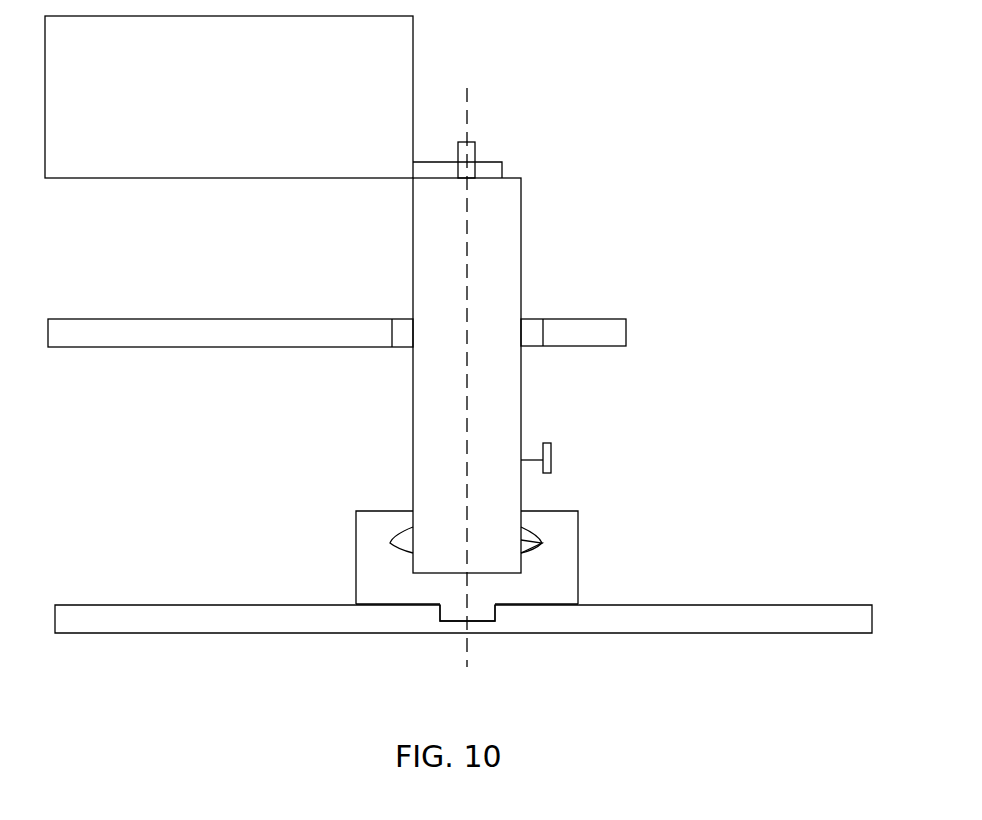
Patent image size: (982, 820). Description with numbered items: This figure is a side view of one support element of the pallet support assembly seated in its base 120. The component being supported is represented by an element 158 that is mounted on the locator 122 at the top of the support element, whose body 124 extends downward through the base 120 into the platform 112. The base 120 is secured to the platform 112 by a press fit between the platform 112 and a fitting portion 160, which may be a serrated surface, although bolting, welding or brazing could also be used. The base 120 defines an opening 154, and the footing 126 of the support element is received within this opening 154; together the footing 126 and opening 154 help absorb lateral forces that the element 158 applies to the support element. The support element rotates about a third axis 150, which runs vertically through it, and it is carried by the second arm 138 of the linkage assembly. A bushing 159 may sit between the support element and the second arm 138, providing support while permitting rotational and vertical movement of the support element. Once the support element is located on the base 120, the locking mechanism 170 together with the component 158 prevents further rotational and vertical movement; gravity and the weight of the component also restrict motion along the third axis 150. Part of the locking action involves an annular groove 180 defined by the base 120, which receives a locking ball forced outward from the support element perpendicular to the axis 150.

The platform 112 is at (168, 618).
The base 120 is at (372, 555).
The locator 122 is at (477, 155).
The column 124 is at (510, 177).
The footing 126 is at (568, 593).
The second arm 138 is at (185, 347).
The third axis 150 is at (468, 112).
The opening 154 is at (522, 518).
The element 158 is at (200, 115).
The bushing 159 is at (526, 347).
The fitting portion 160 is at (440, 613).
The locking mechanism 170 is at (566, 461).
The annular groove 180 is at (535, 547).